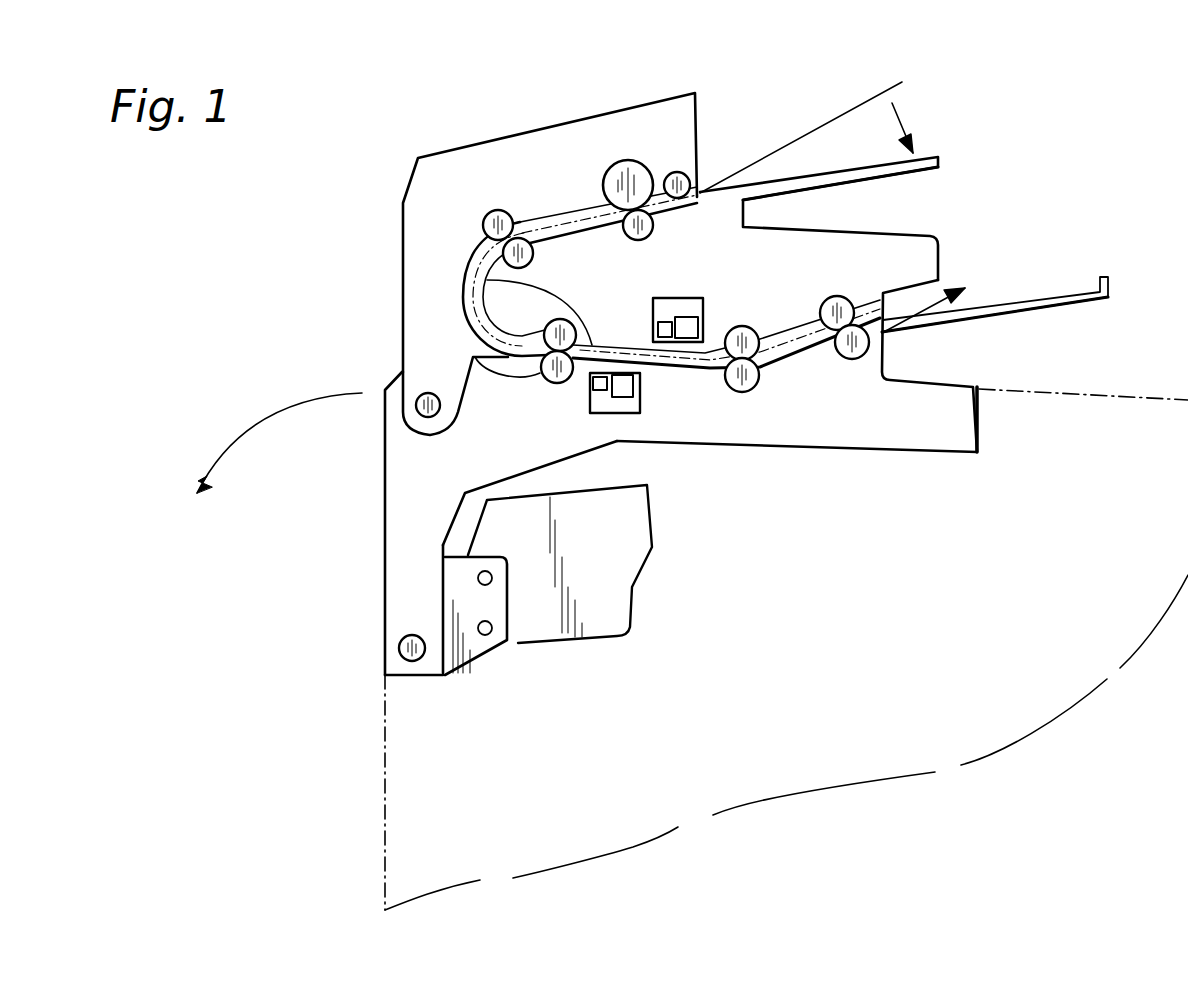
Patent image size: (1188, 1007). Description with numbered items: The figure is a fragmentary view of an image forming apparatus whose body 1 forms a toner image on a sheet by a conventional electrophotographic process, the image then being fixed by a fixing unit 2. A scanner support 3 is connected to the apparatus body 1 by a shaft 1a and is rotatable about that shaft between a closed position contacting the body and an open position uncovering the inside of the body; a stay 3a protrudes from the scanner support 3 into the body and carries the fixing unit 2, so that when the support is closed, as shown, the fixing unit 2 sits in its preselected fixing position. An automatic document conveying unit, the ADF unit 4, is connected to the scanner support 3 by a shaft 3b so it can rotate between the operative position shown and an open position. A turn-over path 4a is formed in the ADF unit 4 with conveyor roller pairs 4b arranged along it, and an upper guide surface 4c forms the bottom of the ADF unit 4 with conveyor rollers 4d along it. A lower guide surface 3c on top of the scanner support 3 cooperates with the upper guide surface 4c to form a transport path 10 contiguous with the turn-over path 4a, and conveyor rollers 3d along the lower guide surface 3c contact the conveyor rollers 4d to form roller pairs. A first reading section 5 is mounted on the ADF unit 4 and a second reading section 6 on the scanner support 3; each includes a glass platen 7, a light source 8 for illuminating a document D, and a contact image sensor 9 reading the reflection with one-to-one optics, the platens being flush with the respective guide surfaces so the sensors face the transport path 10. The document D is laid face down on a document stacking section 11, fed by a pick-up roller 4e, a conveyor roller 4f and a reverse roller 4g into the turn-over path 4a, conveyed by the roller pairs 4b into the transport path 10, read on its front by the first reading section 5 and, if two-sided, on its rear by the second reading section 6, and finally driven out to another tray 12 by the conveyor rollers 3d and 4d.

The apparatus body 1 is at (405, 770).
The shaft 1a is at (407, 653).
The fixing unit 2 is at (610, 607).
The scanner support 3 is at (402, 597).
The stay 3a is at (475, 670).
The shaft 3b is at (421, 415).
The lower guide surface 3c is at (707, 368).
The conveyor rollers 3d is at (473, 355).
The ADF unit 4 is at (407, 180).
The turn-over path 4a is at (473, 250).
The conveyor roller pairs 4b is at (490, 212).
The upper guide surface 4c is at (488, 280).
The conveyor rollers 4d is at (545, 325).
The pick-up roller 4e is at (673, 173).
The conveyor roller 4f is at (624, 216).
The reverse roller 4g is at (630, 162).
The first reading section 5 is at (703, 365).
The second reading section 6 is at (600, 413).
The glass platen 7 is at (650, 342).
The light source 8 is at (658, 318).
The contact image sensor 9 is at (683, 314).
The transport path 10 is at (825, 355).
The document stacking section 11 is at (927, 156).
The tray 12 is at (1078, 290).
The document D is at (852, 115).